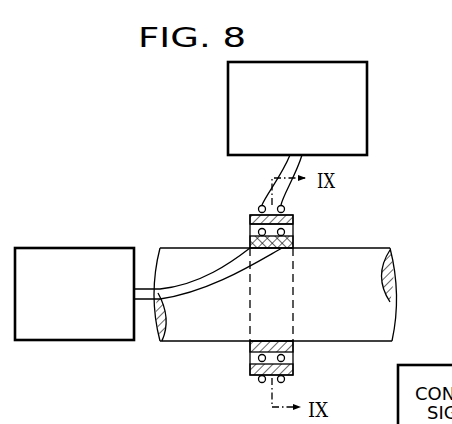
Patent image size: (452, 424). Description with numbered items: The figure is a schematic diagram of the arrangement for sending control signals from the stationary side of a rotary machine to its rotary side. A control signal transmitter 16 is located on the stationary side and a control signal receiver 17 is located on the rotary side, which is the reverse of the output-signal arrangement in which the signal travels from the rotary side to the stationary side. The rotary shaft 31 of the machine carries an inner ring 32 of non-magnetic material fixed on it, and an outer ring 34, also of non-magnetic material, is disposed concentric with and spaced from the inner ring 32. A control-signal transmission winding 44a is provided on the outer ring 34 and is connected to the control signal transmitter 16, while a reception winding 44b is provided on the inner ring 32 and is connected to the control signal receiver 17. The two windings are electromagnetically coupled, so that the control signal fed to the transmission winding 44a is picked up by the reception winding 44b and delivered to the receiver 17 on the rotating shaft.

The control signal transmitter 16 is at (367, 108).
The control signal receiver 17 is at (77, 340).
The rotary shaft 31 is at (397, 285).
The inner ring 32 is at (249, 245).
The outer ring 34 is at (252, 208).
The control-signal transmission winding 44a is at (285, 208).
The reception winding 44b is at (285, 232).